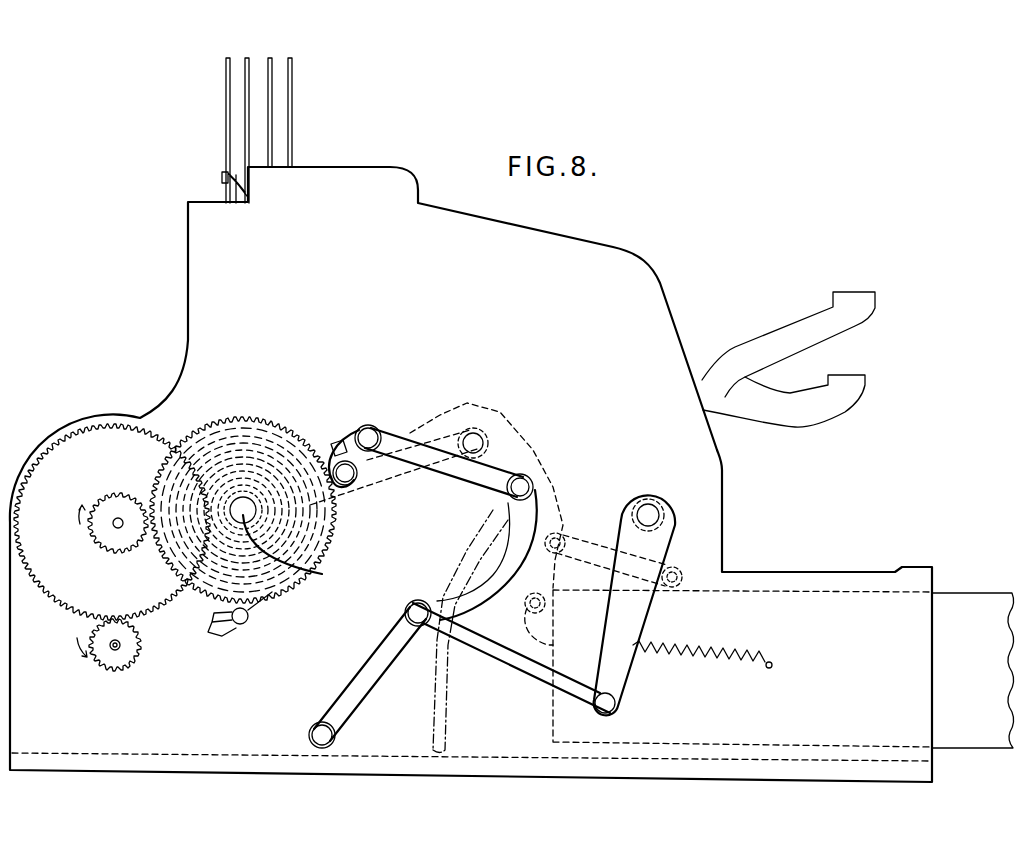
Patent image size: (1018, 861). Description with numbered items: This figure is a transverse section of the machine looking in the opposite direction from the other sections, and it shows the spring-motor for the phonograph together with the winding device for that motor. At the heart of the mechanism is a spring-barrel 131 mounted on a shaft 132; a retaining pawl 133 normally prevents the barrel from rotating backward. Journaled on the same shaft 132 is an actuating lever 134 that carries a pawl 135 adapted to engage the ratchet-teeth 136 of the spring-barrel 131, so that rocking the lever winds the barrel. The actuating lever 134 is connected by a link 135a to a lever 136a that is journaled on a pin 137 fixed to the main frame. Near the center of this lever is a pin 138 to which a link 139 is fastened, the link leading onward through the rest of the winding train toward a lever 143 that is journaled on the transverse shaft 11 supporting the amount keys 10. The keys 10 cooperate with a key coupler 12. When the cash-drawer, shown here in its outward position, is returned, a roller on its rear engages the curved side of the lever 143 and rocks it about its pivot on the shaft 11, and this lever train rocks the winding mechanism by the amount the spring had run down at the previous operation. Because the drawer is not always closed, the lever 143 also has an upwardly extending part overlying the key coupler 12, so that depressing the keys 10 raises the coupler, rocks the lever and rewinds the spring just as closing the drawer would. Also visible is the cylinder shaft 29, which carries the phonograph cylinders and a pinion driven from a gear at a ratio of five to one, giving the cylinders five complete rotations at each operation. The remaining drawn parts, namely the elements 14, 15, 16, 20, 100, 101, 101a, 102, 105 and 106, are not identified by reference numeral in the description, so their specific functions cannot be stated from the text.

The keys 10 is at (797, 350).
The transverse shaft 11 is at (533, 478).
The key coupler 12 is at (390, 487).
The pinion 14 is at (117, 530).
The main gear 15 is at (72, 606).
The pinion 16 is at (136, 649).
The lever 20 is at (640, 612).
The cylinder shaft 29 is at (116, 652).
The pivot 100 is at (536, 597).
The pivot pin 101 is at (648, 505).
The pin 101a is at (676, 566).
The roller 102 is at (576, 548).
The platen 105 is at (973, 670).
The plate 106 is at (470, 406).
The spring-barrel 131 is at (238, 447).
The shaft 132 is at (312, 566).
The retaining pawl 133 is at (274, 601).
The actuating lever 134 is at (335, 443).
The pawl 135 is at (366, 428).
The link 135a is at (410, 450).
The ratchet-teeth 136 is at (321, 446).
The lever 136a is at (405, 617).
The pin 137 is at (321, 727).
The pin 138 is at (418, 611).
The link 139 is at (519, 672).
The lever 143 is at (449, 700).